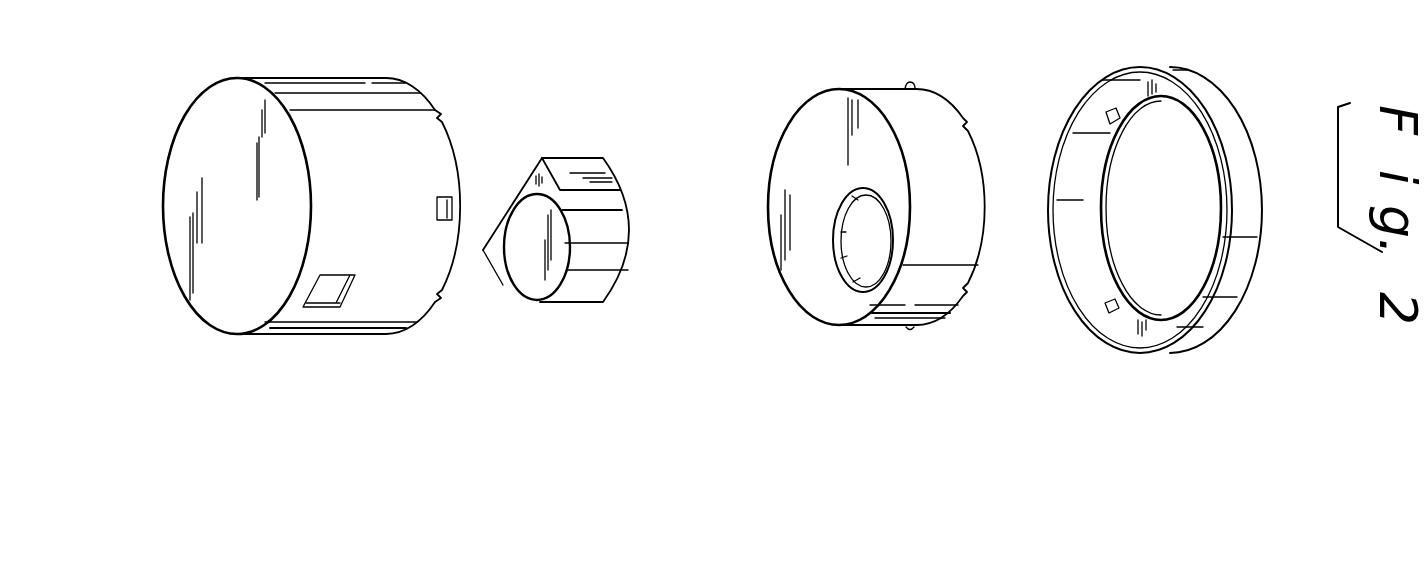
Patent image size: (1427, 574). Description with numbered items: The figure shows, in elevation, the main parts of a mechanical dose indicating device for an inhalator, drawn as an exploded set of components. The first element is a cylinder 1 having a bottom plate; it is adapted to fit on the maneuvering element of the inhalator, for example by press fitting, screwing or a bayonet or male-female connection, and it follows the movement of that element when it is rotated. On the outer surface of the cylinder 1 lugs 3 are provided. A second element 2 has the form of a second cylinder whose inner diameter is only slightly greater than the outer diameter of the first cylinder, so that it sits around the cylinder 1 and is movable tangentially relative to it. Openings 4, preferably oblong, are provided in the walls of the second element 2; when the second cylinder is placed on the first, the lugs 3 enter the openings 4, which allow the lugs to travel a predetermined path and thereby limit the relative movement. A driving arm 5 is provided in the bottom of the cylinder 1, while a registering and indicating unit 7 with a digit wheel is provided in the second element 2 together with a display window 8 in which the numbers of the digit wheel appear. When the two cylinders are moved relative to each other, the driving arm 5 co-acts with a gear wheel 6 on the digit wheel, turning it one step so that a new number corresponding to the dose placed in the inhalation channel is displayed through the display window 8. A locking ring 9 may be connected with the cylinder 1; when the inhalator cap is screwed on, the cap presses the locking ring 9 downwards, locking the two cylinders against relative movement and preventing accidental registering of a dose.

The cylinder 1 is at (960, 92).
The second element 2 is at (437, 87).
The lugs 3 is at (911, 80).
The openings 4 is at (450, 200).
The driving arm 5 is at (878, 268).
The gear wheel 6 is at (971, 198).
The registering and indicating unit 7 is at (625, 287).
The display window 8 is at (328, 293).
The locking ring 9 is at (1235, 90).